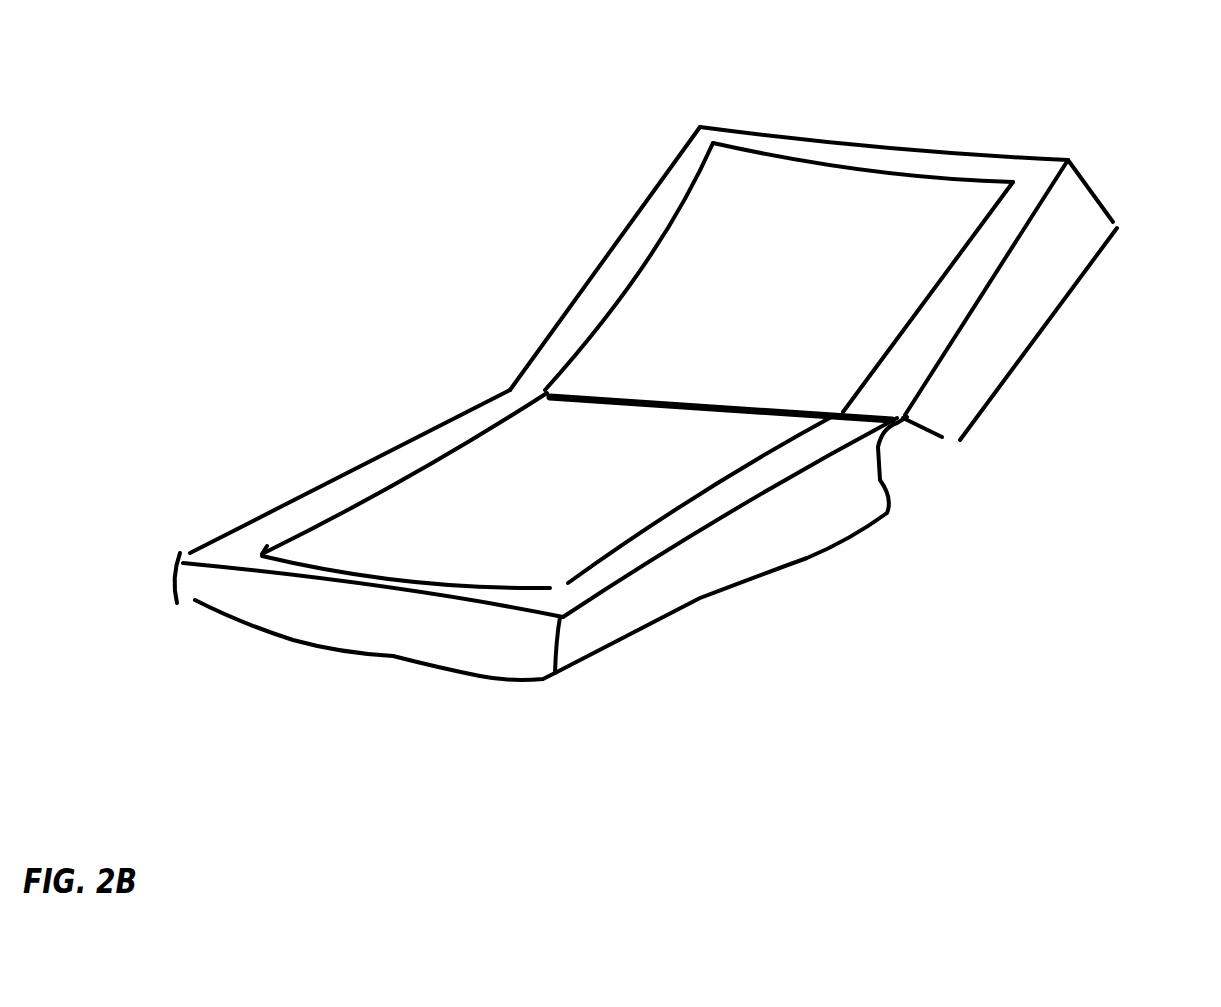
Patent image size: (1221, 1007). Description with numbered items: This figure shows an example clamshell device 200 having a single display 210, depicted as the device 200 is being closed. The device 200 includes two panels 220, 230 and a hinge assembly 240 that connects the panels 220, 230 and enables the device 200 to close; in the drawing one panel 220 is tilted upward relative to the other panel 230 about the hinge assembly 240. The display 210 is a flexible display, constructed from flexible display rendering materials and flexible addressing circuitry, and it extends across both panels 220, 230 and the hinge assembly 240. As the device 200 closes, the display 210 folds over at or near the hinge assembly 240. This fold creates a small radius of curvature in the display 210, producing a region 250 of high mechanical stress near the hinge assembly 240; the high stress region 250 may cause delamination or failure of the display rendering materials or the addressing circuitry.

The clamshell device 200 is at (258, 165).
The display 210 is at (917, 315).
The panel 220 is at (623, 228).
The panel 230 is at (387, 450).
The hinge assembly 240 is at (550, 395).
The region of high mechanical stress 250 is at (790, 408).